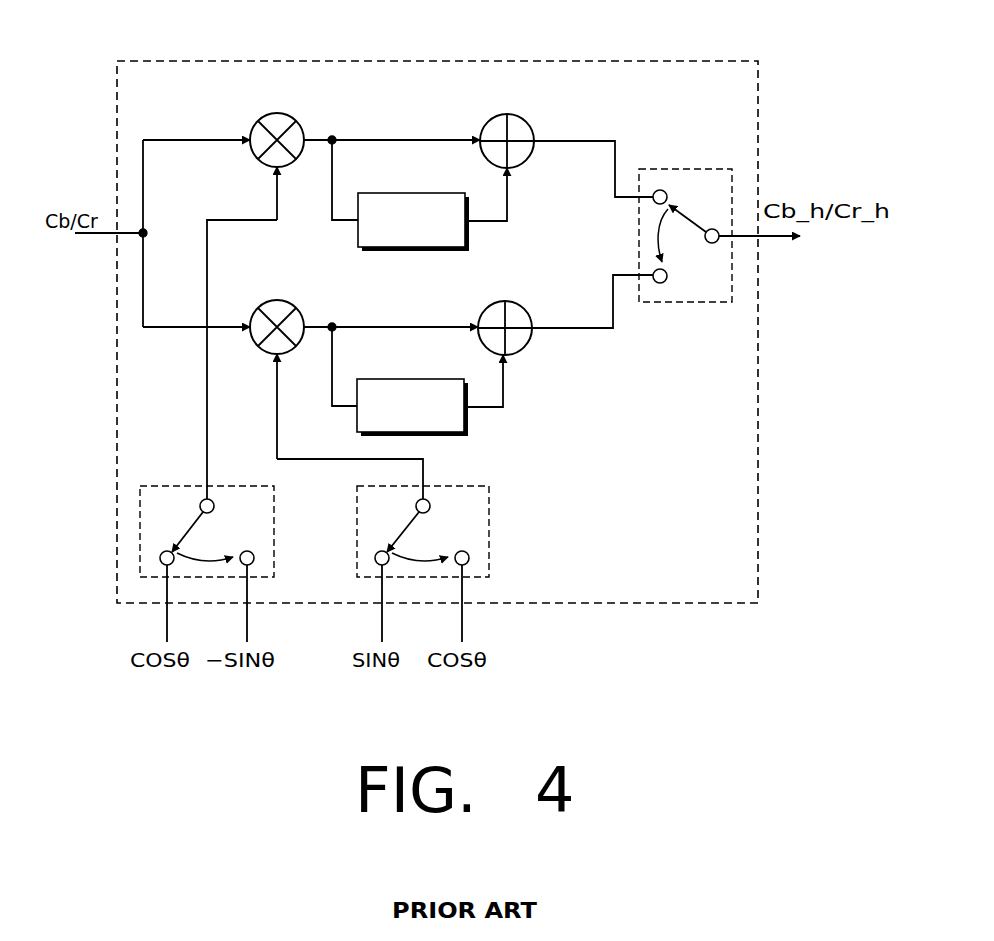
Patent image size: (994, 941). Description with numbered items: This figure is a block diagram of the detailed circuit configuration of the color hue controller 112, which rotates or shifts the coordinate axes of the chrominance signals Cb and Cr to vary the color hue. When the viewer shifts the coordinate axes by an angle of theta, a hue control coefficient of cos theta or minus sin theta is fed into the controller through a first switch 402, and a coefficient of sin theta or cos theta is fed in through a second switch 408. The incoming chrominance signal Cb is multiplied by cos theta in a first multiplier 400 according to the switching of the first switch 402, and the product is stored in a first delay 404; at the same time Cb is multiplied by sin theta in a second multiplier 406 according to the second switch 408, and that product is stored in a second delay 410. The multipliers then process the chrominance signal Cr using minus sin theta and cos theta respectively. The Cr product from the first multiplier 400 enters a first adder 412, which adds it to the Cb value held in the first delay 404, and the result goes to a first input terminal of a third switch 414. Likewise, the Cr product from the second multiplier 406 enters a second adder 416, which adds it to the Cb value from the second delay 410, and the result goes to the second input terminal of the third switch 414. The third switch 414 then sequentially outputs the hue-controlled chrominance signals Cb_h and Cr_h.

The color hue controller 112 is at (519, 61).
The first multiplier 400 is at (293, 117).
The first switch 402 is at (276, 527).
The first delay 404 is at (394, 193).
The second multiplier 406 is at (292, 305).
The second switch 408 is at (491, 527).
The second delay 410 is at (390, 379).
The first adder 412 is at (523, 118).
The third switch 414 is at (691, 169).
The second adder 416 is at (521, 305).